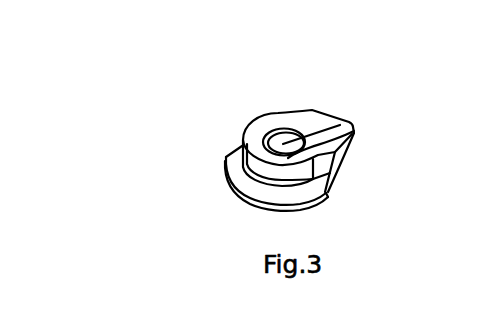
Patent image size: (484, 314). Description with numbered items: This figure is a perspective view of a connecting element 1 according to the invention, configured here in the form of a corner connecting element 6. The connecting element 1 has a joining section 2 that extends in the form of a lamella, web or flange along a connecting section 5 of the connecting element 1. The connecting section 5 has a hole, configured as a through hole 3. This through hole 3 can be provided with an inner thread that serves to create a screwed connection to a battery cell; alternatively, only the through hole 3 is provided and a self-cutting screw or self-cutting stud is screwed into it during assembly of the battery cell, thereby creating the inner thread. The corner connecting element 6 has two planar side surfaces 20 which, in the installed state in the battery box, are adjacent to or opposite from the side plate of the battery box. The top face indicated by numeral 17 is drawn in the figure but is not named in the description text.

The connecting element 1 is at (208, 219).
The corner connecting element 6 is at (254, 133).
The joining section 2 is at (226, 158).
The through hole 3 is at (356, 131).
The connecting section 5 is at (350, 154).
The top face 17 is at (328, 109).
The planar side surfaces 20 is at (344, 111).